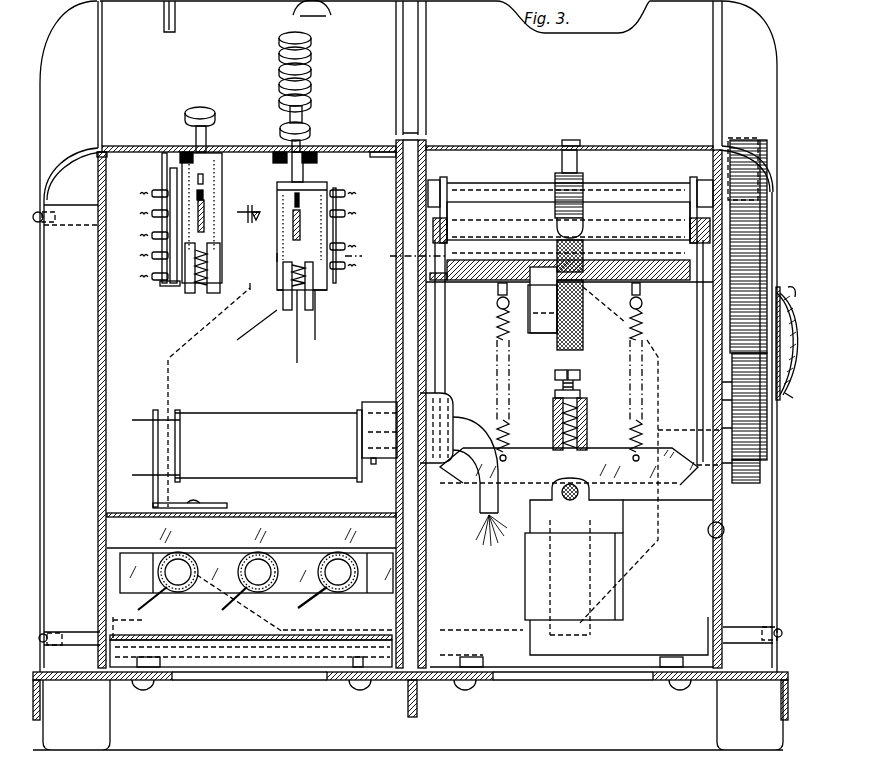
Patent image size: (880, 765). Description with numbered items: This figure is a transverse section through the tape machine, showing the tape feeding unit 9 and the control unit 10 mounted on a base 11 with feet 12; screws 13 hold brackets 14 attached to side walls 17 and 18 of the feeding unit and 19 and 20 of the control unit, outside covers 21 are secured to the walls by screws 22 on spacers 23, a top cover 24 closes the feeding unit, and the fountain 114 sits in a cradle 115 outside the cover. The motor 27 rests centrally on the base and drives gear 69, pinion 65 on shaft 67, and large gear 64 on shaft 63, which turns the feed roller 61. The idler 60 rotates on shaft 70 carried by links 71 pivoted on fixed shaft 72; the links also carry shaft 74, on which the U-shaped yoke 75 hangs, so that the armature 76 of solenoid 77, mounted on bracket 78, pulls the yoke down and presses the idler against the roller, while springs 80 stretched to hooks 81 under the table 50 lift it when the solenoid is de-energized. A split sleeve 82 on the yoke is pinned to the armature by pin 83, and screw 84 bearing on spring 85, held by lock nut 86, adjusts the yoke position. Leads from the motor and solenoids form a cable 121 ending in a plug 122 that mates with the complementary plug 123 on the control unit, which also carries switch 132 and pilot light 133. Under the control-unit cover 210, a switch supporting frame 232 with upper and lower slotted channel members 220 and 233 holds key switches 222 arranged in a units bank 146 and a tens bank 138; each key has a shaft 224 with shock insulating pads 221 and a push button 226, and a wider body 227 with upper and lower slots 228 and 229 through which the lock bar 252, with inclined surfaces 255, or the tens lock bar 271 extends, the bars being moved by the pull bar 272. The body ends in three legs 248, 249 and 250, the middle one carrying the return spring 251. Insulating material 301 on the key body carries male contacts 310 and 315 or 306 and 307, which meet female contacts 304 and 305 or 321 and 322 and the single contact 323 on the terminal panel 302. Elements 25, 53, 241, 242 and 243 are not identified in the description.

The tape feeding unit 9 is at (770, 30).
The control unit 10 is at (58, 14).
The base 11 is at (115, 683).
The feet 12 is at (108, 737).
The screws 13 is at (145, 690).
The brackets 14 is at (115, 620).
The side wall 17 is at (713, 137).
The side wall 18 is at (421, 138).
The side wall 19 is at (405, 128).
The side wall 20 is at (97, 149).
The outside covers 21 is at (40, 415).
The screws 22 is at (35, 221).
The spacers 23 is at (63, 221).
The top cover 24 is at (633, 152).
The connector assembly 25 is at (435, 450).
The motor 27 is at (168, 391).
The table 50 is at (488, 282).
The connecting member 53 is at (492, 297).
The idler 60 is at (584, 176).
The feed roller 61 is at (585, 252).
The shaft 63 is at (655, 312).
The large gear 64 is at (762, 222).
The pinion 65 is at (767, 420).
The shaft 67 is at (728, 400).
The gear 69 is at (756, 474).
The shaft 70 is at (441, 207).
The links 71 is at (441, 180).
The fixed shaft 72 is at (498, 190).
The shaft 74 is at (642, 230).
The U-shaped yoke 75 is at (697, 370).
The armature 76 is at (586, 521).
The solenoid 77 is at (534, 582).
The bracket 78 is at (718, 515).
The springs 80 is at (571, 379).
The hooks 81 is at (645, 292).
The split sleeve 82 is at (584, 450).
The pin 83 is at (580, 492).
The screw 84 is at (581, 379).
The spring 85 is at (553, 420).
The lock nut 86 is at (581, 395).
The fountain 114 is at (793, 336).
The cradle 115 is at (796, 401).
The cable 121 is at (478, 508).
The plug 122 is at (453, 406).
The complementary plug 123 is at (374, 402).
The switch 132 is at (176, 17).
The pilot light 133 is at (330, 12).
The tens bank 138 is at (205, 102).
The units bank 146 is at (323, 90).
The cover 210 is at (237, 147).
The upper slotted channel member 220 is at (313, 233).
The shock insulating pads 221 is at (192, 148).
The key switches 222 is at (274, 254).
The upper shaft portions 224 is at (292, 169).
The push buttons 226 is at (308, 100).
The lower body portions 227 is at (306, 188).
The upper slots 228 is at (206, 178).
The lower slots 229 is at (327, 238).
The switch supporting frame 232 is at (210, 322).
The lower slotted channel member 233 is at (290, 313).
The spring 241 is at (310, 338).
The housing bottom 242 is at (251, 287).
The spring plate 243 is at (313, 293).
The outside leg 248 is at (240, 330).
The middle leg 249 is at (298, 356).
The outside leg 250 is at (316, 330).
The spring 251 is at (203, 268).
The lock bar 252 is at (292, 222).
The angular top surfaces 255 is at (204, 194).
The lock bar 271 is at (205, 220).
The pull bar 272 is at (246, 222).
The insulating material 301 is at (173, 287).
The terminal panel 302 is at (335, 150).
The double female contacts 304 is at (345, 214).
The double female contacts 305 is at (345, 246).
The double male contacts 306 is at (162, 176).
The double male contacts 307 is at (152, 254).
The double U-shaped male contacts 310 is at (345, 198).
The double U-shaped male contacts 315 is at (395, 257).
The double female contacts 321 is at (152, 276).
The double female contacts 322 is at (152, 194).
The single contact 323 is at (152, 234).